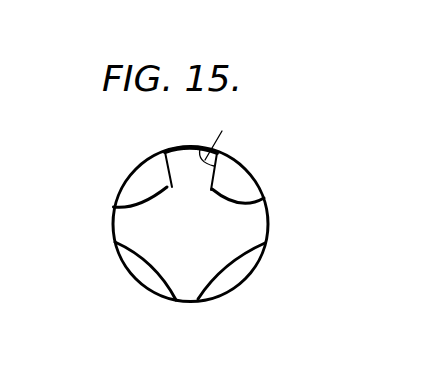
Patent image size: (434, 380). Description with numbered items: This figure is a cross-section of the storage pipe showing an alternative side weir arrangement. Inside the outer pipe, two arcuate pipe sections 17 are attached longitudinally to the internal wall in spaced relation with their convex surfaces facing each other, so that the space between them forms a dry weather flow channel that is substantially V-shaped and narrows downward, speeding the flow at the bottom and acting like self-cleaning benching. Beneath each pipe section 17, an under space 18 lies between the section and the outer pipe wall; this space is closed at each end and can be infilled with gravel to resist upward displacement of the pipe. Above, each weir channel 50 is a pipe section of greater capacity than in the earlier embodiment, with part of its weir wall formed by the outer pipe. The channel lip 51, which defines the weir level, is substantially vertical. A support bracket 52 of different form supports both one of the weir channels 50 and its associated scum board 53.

The arcuate pipe section 17 is at (210, 268).
The under space 18 is at (148, 273).
The weir channel 50 is at (183, 142).
The channel lip 51 is at (132, 200).
The support bracket 52 is at (167, 170).
The scum board 53 is at (201, 145).